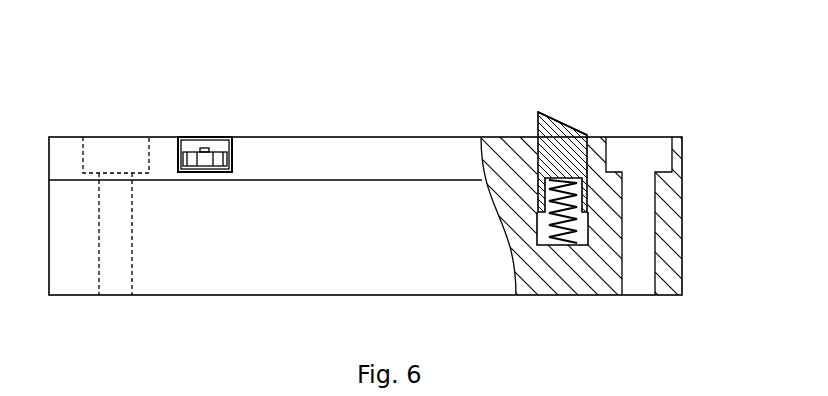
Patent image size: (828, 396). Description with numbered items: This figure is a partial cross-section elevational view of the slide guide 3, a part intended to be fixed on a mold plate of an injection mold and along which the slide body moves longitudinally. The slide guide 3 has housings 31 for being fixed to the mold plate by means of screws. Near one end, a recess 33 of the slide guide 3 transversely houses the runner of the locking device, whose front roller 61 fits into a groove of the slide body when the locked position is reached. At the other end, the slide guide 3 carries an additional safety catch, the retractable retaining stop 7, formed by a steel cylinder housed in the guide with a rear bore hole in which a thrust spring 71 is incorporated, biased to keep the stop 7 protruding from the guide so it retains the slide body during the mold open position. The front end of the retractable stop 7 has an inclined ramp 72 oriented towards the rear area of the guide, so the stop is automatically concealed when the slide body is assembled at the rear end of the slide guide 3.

The slide guide 3 is at (313, 155).
The housings 31 is at (82, 150).
The recess 33 is at (232, 158).
The front roller 61 is at (205, 158).
The retractable retaining stop 7 is at (571, 125).
The thrust spring 71 is at (548, 230).
The inclined ramp 72 is at (556, 121).